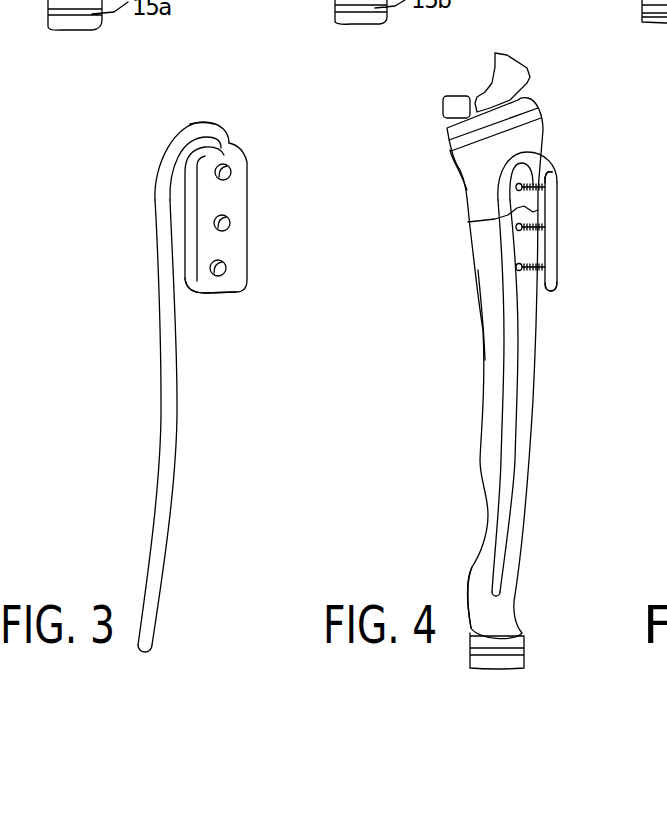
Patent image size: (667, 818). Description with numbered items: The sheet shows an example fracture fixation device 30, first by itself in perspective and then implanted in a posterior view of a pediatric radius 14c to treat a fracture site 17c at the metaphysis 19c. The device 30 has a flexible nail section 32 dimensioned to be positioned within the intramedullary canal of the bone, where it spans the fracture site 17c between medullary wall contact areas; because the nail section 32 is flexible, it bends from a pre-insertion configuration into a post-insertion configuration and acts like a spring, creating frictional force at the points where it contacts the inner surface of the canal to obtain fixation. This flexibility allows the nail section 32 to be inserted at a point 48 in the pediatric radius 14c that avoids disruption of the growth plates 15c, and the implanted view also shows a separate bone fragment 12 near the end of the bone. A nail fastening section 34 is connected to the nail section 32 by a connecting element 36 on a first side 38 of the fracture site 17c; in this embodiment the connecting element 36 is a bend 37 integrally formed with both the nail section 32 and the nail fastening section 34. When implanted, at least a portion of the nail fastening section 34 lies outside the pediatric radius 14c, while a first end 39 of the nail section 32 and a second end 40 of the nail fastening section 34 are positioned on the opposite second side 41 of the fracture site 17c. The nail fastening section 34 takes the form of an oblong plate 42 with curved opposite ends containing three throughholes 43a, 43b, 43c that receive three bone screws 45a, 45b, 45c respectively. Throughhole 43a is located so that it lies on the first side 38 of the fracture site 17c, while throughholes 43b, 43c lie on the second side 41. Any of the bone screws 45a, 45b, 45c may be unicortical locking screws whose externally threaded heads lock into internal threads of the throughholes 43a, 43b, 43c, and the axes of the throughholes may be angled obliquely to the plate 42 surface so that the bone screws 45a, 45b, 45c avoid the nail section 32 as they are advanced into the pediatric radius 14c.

In FIG. 4, the bone fragment 12 is at (509, 77).
In FIG. 4, the pediatric radius 14c is at (496, 618).
In FIG. 4, the growth plates 15c is at (528, 118).
In FIG. 4, the fracture site 17c is at (465, 227).
In FIG. 4, the metaphysis 19c is at (452, 177).
In FIG. 3, the fracture fixation device 30 is at (201, 385).
In FIG. 3, the nail section 32 is at (168, 433).
In FIG. 4, the nail section 32 is at (503, 502).
In FIG. 3, the nail fastening section 34 is at (266, 202).
In FIG. 4, the nail fastening section 34 is at (545, 310).
In FIG. 3, the connecting element 36 is at (226, 117).
In FIG. 4, the connecting element 36 is at (527, 176).
In FIG. 3, the bend 37 is at (208, 125).
In FIG. 4, the first side of the fracture site 38 is at (556, 127).
In FIG. 3, the first end of the nail section 39 is at (145, 656).
In FIG. 4, the first end of the nail section 39 is at (495, 573).
In FIG. 3, the second end of the nail fastening section 40 is at (218, 293).
In FIG. 4, the second end of the nail fastening section 40 is at (549, 291).
In FIG. 4, the second side of the fracture site 41 is at (475, 298).
In FIG. 3, the oblong plate 42 is at (198, 224).
In FIG. 4, the oblong plate 42 is at (551, 173).
In FIG. 3, the throughhole 43a is at (232, 170).
In FIG. 3, the throughhole 43b is at (230, 226).
In FIG. 3, the throughhole 43c is at (227, 268).
In FIG. 4, the bone screw 45a is at (541, 196).
In FIG. 4, the bone screw 45b is at (541, 229).
In FIG. 4, the bone screw 45c is at (541, 268).
In FIG. 4, the insertion point 48 is at (543, 147).